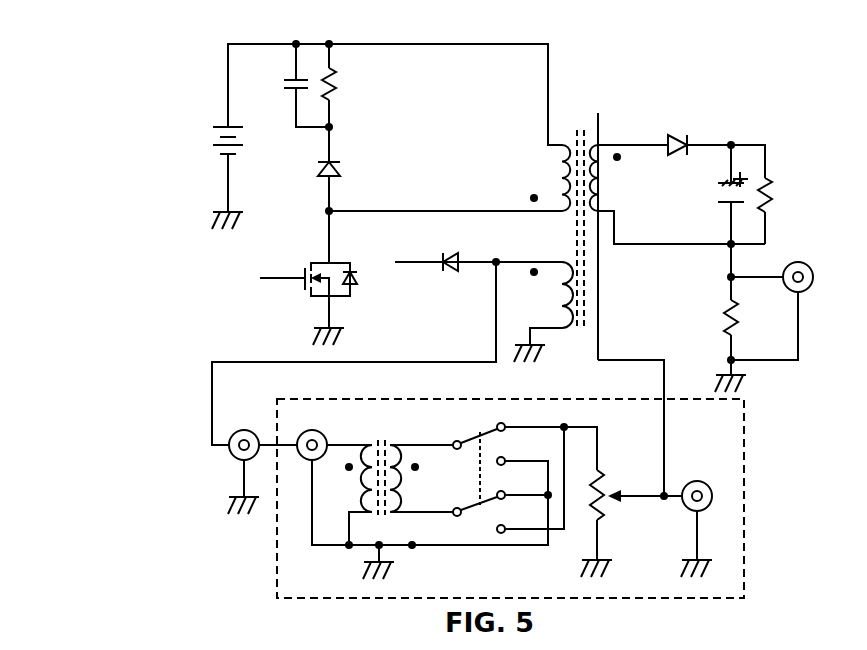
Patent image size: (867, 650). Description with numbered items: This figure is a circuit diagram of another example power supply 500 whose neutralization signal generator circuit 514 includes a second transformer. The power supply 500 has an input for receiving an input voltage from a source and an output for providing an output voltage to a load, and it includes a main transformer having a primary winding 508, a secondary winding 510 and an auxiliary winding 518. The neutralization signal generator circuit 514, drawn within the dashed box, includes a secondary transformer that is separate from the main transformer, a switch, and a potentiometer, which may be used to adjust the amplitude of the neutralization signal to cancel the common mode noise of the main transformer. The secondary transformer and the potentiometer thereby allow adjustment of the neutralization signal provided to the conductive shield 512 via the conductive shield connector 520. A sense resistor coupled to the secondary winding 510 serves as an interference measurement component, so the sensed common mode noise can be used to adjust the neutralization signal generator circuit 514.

The power supply 500 is at (150, 38).
The primary winding 508 is at (534, 155).
The secondary winding 510 is at (598, 190).
The conductive shield 512 is at (600, 122).
The neutralization signal generator circuit 514 is at (745, 500).
The auxiliary winding 518 is at (553, 330).
The conductive shield connector 520 is at (612, 360).